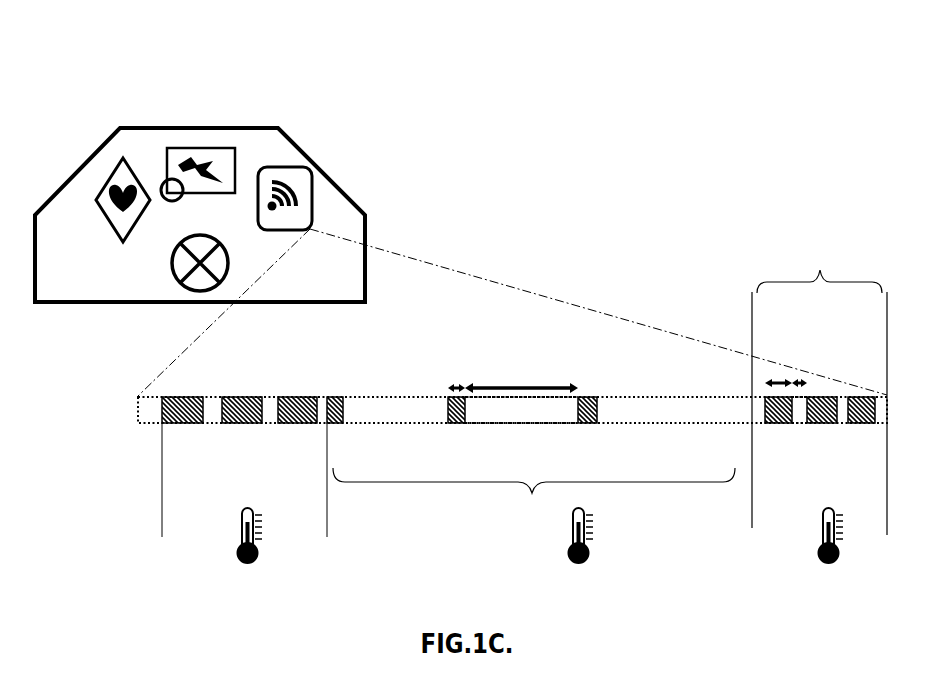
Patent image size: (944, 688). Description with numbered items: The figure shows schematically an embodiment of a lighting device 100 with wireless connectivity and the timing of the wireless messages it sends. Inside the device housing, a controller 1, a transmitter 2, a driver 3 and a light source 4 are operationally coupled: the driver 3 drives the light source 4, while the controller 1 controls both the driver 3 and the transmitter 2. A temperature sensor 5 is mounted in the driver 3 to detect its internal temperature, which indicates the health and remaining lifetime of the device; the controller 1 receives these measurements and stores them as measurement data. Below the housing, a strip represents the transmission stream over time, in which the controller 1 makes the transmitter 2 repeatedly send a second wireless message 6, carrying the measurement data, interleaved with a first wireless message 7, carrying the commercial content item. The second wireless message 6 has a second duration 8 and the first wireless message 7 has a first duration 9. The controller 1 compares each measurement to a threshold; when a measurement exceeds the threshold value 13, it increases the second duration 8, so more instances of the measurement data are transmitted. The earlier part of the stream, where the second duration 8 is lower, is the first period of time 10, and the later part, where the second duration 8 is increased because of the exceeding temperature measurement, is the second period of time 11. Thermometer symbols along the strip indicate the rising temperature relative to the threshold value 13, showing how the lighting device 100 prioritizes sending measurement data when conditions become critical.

The lighting device 100 is at (99, 104).
The controller 1 is at (125, 159).
The transmitter 2 is at (315, 196).
The driver 3 is at (242, 163).
The light source 4 is at (171, 266).
The temperature sensor 5 is at (167, 203).
The second wireless message 6 is at (462, 424).
The first wireless message 7 is at (476, 408).
The second duration 8 is at (455, 386).
The first duration 9 is at (513, 386).
The first period of time 10 is at (534, 496).
The second period of time 11 is at (819, 387).
The threshold value 13 is at (241, 536).